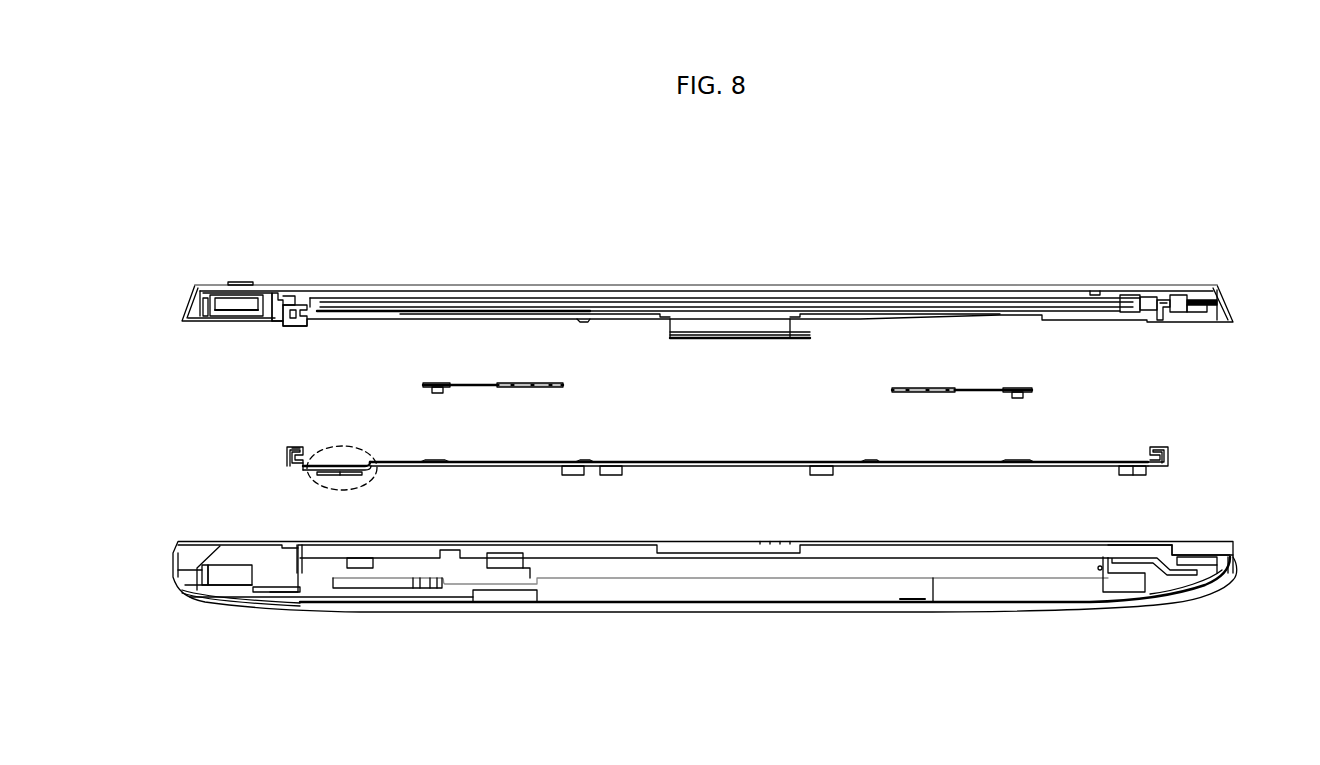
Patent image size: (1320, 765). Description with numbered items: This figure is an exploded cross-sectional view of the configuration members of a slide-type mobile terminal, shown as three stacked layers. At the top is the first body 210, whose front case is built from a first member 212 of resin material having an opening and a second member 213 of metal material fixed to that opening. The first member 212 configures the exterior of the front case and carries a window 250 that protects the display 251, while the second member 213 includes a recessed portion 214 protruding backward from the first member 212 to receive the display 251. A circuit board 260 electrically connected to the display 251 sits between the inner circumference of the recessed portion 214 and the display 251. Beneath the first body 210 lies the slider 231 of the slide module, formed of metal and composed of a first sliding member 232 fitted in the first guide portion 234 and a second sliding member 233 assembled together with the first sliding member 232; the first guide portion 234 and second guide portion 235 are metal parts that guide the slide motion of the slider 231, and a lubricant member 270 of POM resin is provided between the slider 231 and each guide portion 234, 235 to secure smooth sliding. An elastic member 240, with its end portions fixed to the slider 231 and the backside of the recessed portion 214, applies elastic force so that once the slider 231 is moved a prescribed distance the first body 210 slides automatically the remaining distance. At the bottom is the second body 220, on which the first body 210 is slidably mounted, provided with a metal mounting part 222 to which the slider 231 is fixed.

The first body 210 is at (203, 279).
The first member 212 is at (1222, 300).
The second member 213 is at (1150, 298).
The recessed portion 214 is at (333, 322).
The second body 220 is at (1226, 590).
The mounting part 222 is at (1135, 540).
The slider 231 is at (1180, 448).
The first sliding member 232 is at (295, 468).
The second sliding member 233 is at (402, 468).
The first guide portion 234 is at (288, 323).
The second guide portion 235 is at (1160, 323).
The elastic member 240 is at (510, 388).
The window 250 is at (291, 283).
The display 251 is at (372, 297).
The circuit board 260 is at (440, 304).
The lubricant member 270 is at (303, 450).